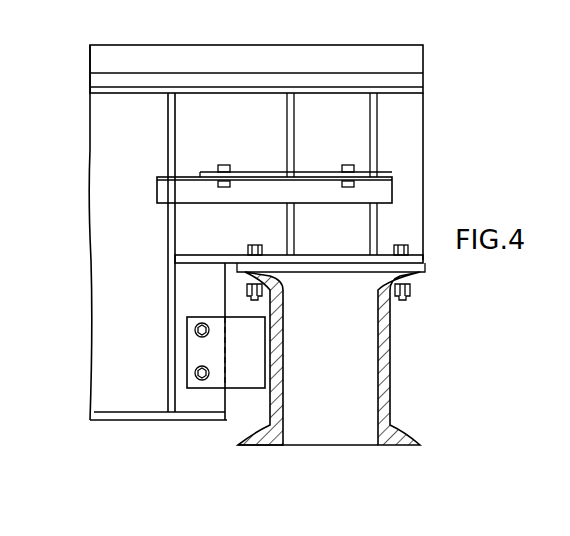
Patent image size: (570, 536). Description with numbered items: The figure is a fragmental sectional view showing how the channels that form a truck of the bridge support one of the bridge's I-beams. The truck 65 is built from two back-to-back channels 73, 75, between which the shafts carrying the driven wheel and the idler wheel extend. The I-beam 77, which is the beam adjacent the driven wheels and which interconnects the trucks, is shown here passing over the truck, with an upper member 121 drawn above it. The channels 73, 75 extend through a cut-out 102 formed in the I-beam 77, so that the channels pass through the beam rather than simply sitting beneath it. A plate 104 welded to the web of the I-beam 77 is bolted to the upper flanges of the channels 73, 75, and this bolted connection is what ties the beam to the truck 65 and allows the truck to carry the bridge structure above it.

The support beam 121 is at (408, 62).
The I-beam 77 is at (190, 143).
The plate 104 is at (350, 265).
The truck 65 is at (343, 358).
The channel 75 is at (390, 352).
The cut-out 102 is at (251, 392).
The channel 73 is at (268, 419).